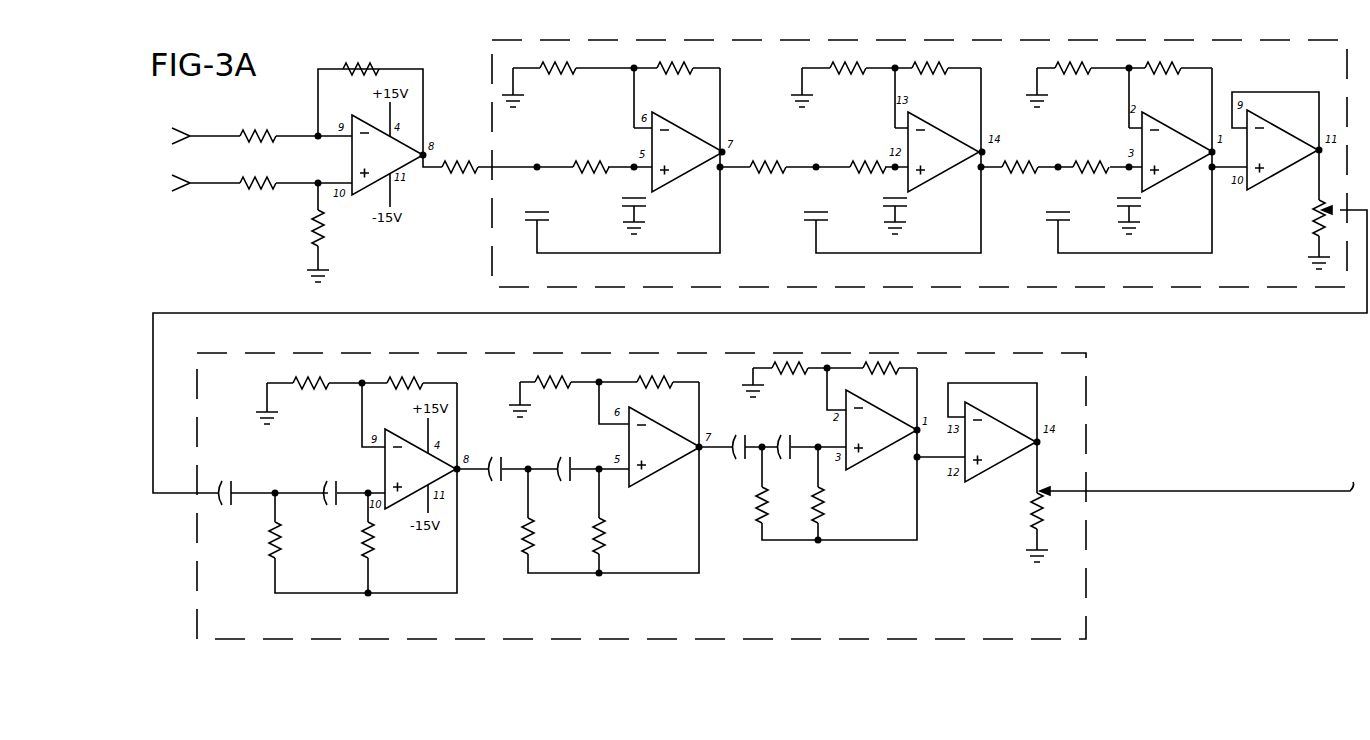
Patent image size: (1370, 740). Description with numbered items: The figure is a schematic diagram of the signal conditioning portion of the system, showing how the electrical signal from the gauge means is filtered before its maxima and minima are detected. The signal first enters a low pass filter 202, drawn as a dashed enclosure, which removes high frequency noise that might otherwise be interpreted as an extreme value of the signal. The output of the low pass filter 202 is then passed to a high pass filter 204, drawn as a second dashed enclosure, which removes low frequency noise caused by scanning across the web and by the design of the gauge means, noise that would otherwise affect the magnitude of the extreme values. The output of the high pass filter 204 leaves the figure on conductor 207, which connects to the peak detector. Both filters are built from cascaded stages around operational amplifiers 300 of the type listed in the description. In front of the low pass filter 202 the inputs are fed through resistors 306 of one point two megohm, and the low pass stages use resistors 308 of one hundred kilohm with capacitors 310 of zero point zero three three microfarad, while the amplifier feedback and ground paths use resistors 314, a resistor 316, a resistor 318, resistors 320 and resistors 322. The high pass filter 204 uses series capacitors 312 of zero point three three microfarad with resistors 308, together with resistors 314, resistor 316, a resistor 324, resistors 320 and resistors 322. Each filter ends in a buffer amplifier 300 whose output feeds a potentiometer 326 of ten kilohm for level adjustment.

The low pass filter 202 is at (490, 250).
The high pass filter 204 is at (767, 639).
The conductor 207 is at (1178, 486).
The operational amplifier 300 is at (372, 195).
The resistor 306 is at (363, 70).
The resistor 308 is at (591, 160).
The capacitor 310 is at (618, 206).
The capacitor 312 is at (332, 480).
The resistor 314 is at (551, 78).
The resistor 316 is at (678, 76).
The resistor 318 is at (855, 78).
The resistor 320 is at (935, 78).
The resistor 322 is at (1165, 75).
The resistor 324 is at (551, 380).
The potentiometer 326 is at (1315, 215).